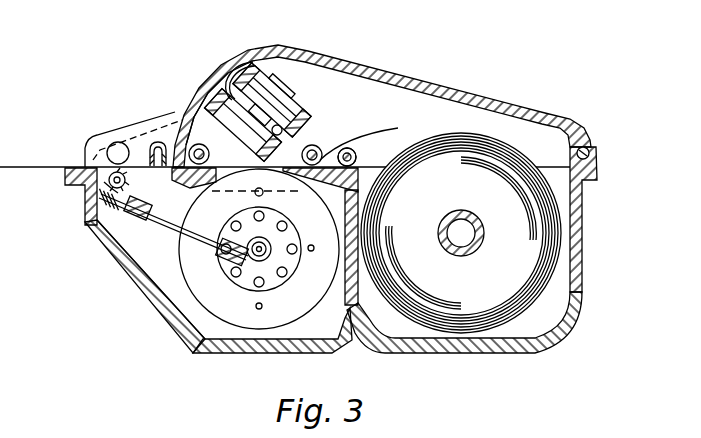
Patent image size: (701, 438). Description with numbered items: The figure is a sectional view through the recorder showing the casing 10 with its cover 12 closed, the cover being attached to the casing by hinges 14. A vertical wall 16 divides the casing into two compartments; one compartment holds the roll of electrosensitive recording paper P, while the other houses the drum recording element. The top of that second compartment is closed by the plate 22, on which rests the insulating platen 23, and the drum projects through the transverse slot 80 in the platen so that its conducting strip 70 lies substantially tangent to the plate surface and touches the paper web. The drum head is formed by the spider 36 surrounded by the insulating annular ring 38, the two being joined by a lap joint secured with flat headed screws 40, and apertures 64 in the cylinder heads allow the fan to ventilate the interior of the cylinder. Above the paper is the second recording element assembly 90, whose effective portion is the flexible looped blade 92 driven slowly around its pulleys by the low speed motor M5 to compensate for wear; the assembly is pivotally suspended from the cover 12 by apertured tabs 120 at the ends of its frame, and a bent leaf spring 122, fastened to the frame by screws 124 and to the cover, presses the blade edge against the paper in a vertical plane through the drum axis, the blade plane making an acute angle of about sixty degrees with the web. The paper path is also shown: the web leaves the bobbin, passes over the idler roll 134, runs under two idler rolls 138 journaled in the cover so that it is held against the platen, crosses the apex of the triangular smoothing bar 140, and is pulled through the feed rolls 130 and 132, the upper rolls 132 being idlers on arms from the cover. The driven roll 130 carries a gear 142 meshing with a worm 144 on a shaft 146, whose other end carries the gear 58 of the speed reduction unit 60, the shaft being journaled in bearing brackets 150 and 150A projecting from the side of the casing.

The casing 10 is at (143, 288).
The cover 12 is at (500, 103).
The hinges 14 is at (590, 148).
The vertical wall 16 is at (328, 337).
The plate 22 is at (351, 149).
The platen 23 is at (390, 133).
The spider 36 is at (275, 288).
The annular ring 38 is at (253, 324).
The flat headed screws 40 is at (308, 233).
The gear 58 is at (244, 286).
The speed reduction unit 60 is at (151, 279).
The apertures 64 is at (289, 271).
The conducting strip 70 is at (177, 323).
The transverse slot 80 is at (316, 146).
The recording element assembly 90 is at (306, 87).
The blade 92 is at (205, 92).
The apertured tabs 120 is at (312, 112).
The bent leaf spring 122 is at (210, 72).
The screws 124 is at (271, 85).
The driven feed roll 130 is at (110, 174).
The idler feed rolls 132 is at (110, 145).
The idler roll 134 is at (356, 158).
The idler rolls 138 is at (200, 147).
The smoothing bar 140 is at (157, 143).
The gear 142 is at (107, 187).
The worm 144 is at (100, 212).
The shaft 146 is at (150, 214).
The bearing brackets 150 is at (222, 263).
The coupling sleeve 150A is at (135, 219).
The low speed motor M5 is at (263, 80).
The recording paper P is at (472, 323).